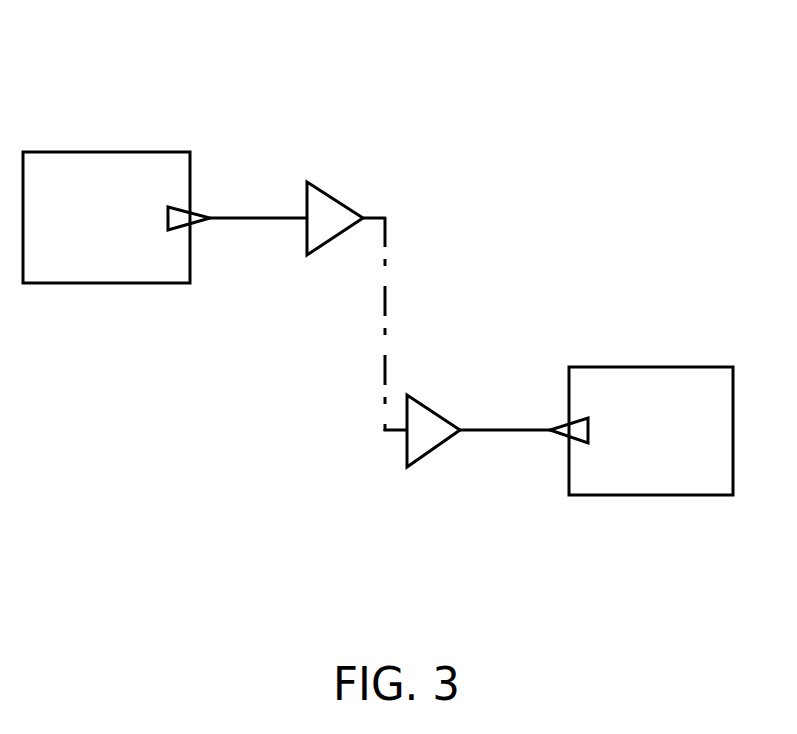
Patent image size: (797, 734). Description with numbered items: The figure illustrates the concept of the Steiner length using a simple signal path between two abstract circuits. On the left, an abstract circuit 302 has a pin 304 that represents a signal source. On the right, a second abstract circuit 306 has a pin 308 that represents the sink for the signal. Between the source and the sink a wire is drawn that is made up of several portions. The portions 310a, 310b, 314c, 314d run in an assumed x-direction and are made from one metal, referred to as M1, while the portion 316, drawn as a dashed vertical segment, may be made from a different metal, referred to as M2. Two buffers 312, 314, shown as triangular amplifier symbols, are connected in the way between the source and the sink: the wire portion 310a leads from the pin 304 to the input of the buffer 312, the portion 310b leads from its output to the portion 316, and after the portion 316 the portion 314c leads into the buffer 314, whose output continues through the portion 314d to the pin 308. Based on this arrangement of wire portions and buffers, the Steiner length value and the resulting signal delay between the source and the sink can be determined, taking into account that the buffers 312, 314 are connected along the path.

The abstract circuit 302 is at (110, 217).
The pin 304 is at (204, 203).
The second abstract circuit 306 is at (685, 447).
The pin 308 is at (558, 412).
The wire portion 310a is at (286, 205).
The wire portion 310b is at (373, 208).
The buffer 312 is at (346, 190).
The buffer 314 is at (431, 479).
The wire portion 314c is at (389, 455).
The wire portion 314d is at (528, 452).
The wire portion 316 is at (372, 328).